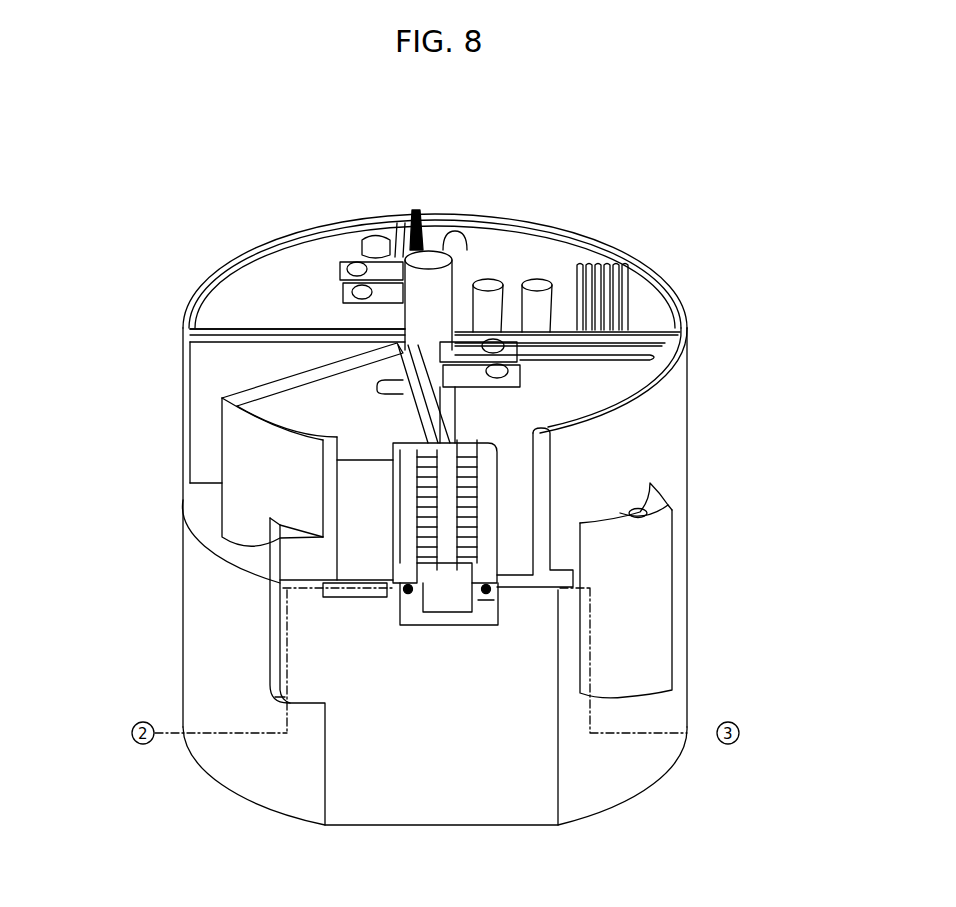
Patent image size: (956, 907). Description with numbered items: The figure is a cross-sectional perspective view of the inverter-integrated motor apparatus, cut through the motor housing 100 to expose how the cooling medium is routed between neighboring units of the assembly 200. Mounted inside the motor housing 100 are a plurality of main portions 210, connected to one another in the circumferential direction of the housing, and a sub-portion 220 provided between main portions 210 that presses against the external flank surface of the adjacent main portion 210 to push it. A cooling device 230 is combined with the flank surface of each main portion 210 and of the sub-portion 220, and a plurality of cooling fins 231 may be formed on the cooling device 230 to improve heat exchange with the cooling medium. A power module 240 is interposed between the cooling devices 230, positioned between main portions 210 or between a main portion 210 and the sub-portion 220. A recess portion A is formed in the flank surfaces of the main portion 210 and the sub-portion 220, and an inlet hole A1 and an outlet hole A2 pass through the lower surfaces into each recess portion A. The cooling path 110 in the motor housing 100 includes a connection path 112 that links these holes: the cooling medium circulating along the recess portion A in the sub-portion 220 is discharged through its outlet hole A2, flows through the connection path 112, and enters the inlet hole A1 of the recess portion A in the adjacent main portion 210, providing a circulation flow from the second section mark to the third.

The motor housing 100 is at (713, 632).
The cooling path 110 is at (441, 738).
The connection path 112 is at (457, 592).
The motor unit 200 is at (705, 333).
The main portion 210 is at (278, 243).
The sub-portion 220 is at (262, 473).
The cooling device 230 is at (400, 213).
The cooling fin 231 is at (428, 512).
The power module 240 is at (378, 242).
The recess portion A is at (410, 585).
The inlet hole A1 is at (487, 592).
The outlet hole A2 is at (280, 697).